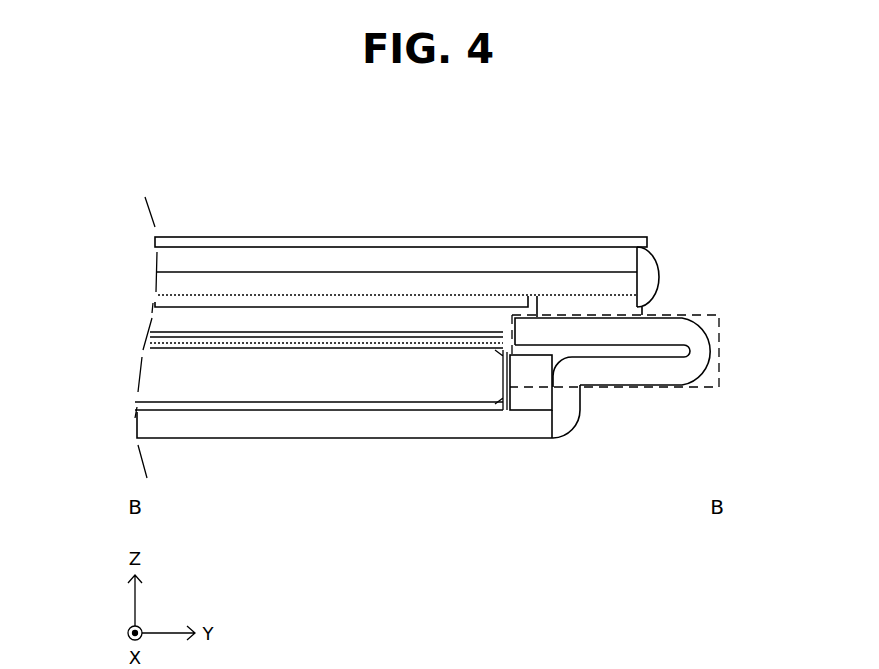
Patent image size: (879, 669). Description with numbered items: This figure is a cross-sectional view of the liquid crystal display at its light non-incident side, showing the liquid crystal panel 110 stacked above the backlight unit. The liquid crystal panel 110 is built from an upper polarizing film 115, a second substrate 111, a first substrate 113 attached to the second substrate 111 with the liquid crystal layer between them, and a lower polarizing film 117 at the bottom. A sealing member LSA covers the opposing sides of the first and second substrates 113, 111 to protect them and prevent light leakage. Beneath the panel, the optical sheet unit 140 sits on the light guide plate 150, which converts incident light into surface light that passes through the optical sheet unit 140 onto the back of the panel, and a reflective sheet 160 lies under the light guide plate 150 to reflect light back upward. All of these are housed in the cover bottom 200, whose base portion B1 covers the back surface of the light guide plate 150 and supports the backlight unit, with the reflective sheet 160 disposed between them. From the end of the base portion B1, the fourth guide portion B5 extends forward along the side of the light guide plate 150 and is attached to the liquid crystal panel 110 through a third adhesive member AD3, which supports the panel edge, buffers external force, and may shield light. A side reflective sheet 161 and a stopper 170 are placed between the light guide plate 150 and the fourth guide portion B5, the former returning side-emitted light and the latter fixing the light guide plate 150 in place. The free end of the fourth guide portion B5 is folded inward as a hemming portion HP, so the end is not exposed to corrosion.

The liquid crystal panel 110 is at (182, 170).
The upper polarizing film 115 is at (193, 240).
The second substrate 111 is at (266, 262).
The first substrate 113 is at (337, 287).
The lower polarizing film 117 is at (407, 302).
The third adhesive member AD3 is at (560, 305).
The sealing member LSA is at (650, 273).
The hemming portion HP is at (720, 351).
The optical sheet unit 140 is at (150, 339).
The light guide plate 150 is at (150, 369).
The reflective sheet 160 is at (150, 402).
The cover bottom 200 is at (150, 427).
The base portion B1 is at (345, 427).
The side reflective sheet 161 is at (505, 411).
The stopper 170 is at (536, 399).
The fourth guide portion B5 is at (570, 401).